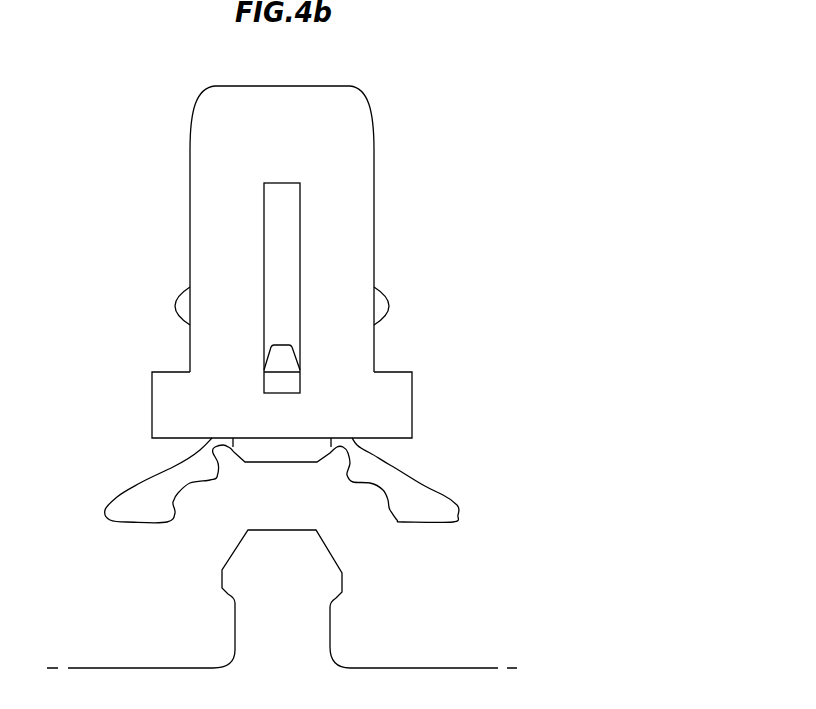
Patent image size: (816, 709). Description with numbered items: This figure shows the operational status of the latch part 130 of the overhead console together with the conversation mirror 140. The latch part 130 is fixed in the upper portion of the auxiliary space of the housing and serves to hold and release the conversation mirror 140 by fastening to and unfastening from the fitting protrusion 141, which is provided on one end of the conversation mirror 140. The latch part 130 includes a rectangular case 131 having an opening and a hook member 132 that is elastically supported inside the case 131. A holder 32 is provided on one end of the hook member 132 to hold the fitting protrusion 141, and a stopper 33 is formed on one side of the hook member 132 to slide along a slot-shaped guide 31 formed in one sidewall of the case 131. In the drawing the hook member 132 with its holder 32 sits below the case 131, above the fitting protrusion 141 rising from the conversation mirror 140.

The latch part 130 is at (382, 127).
The rectangular case 131 is at (347, 242).
The hook member 132 is at (303, 445).
The slot-shaped guide 31 is at (282, 200).
The stopper 33 is at (273, 357).
The holder 32 is at (430, 495).
The fitting protrusion 141 is at (310, 580).
The conversation mirror 140 is at (432, 678).